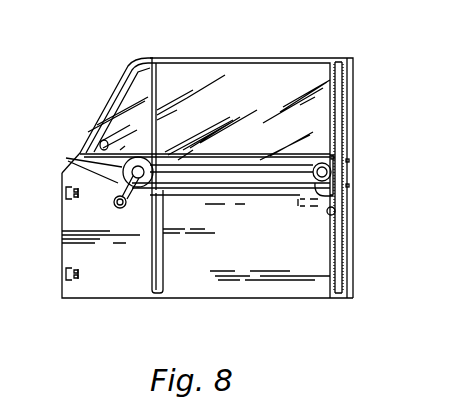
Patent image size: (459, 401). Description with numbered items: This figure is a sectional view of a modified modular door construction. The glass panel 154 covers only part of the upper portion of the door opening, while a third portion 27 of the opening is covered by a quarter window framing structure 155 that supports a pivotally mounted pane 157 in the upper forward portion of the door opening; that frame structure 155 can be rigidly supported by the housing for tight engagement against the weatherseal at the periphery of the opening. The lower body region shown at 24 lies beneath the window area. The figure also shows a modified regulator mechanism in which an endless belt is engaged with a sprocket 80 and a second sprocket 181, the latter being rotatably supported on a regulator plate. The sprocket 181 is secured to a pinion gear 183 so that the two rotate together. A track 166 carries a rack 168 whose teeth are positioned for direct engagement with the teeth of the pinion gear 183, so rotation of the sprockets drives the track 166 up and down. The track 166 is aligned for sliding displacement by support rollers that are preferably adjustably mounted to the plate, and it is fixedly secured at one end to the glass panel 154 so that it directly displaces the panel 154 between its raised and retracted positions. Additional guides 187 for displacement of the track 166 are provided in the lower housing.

The body 24 is at (83, 225).
The third portion 27 is at (95, 118).
The sprocket 80 is at (123, 170).
The glass panel 154 is at (250, 73).
The quarter window framing structure 155 is at (127, 65).
The pivotally mounted pane 157 is at (140, 77).
The track 166 is at (347, 128).
The rack 168 is at (337, 117).
The sprocket 181 is at (332, 165).
The pinion gear 183 is at (333, 193).
The guides 187 is at (340, 217).